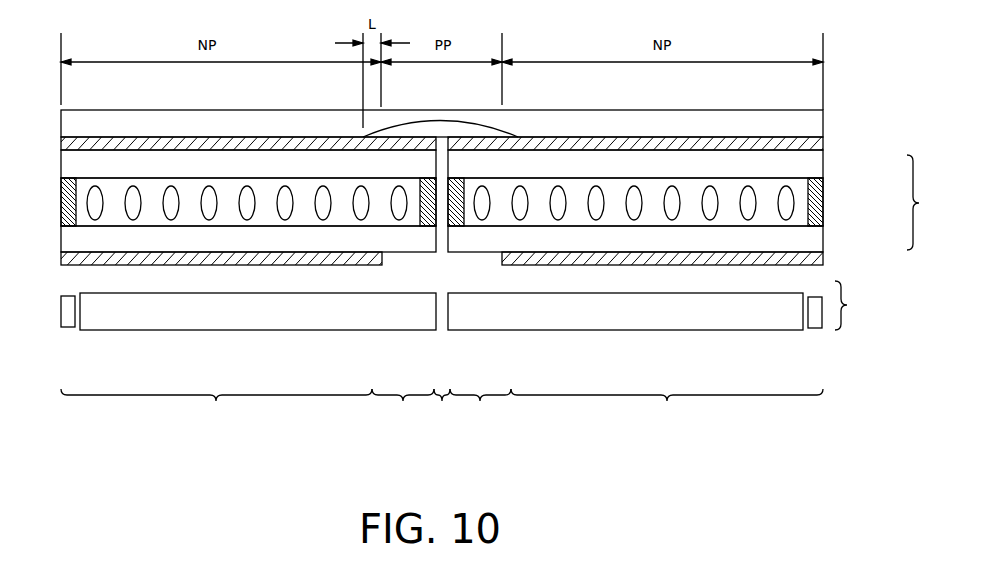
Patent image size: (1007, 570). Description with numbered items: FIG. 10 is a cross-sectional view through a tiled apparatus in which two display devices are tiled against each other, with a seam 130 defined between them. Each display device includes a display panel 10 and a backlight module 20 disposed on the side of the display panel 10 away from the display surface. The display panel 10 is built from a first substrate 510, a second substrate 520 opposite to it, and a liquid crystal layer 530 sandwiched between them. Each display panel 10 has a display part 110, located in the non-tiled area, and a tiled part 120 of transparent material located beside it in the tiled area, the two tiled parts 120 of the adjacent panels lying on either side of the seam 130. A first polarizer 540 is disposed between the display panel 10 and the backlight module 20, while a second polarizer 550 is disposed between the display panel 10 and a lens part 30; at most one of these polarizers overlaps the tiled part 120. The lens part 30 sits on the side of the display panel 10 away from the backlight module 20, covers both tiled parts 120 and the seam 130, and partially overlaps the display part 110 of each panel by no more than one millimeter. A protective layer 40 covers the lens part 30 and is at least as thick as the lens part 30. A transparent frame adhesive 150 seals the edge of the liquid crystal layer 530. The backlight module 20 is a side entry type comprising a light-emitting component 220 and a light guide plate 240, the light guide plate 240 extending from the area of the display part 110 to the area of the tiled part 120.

The display panel 10 is at (928, 202).
The backlight module 20 is at (858, 305).
The lens part 30 is at (437, 137).
The protective layer 40 is at (808, 126).
The display part 110 is at (442, 407).
The tiled part 120 is at (441, 407).
The seam 130 is at (442, 407).
The frame adhesive 150 is at (68, 208).
The light-emitting component 220 is at (69, 312).
The light guide plate 240 is at (188, 311).
The first substrate 510 is at (808, 234).
The second substrate 520 is at (808, 167).
The liquid crystal layer 530 is at (831, 178).
The first polarizer 540 is at (808, 260).
The second polarizer 550 is at (808, 146).